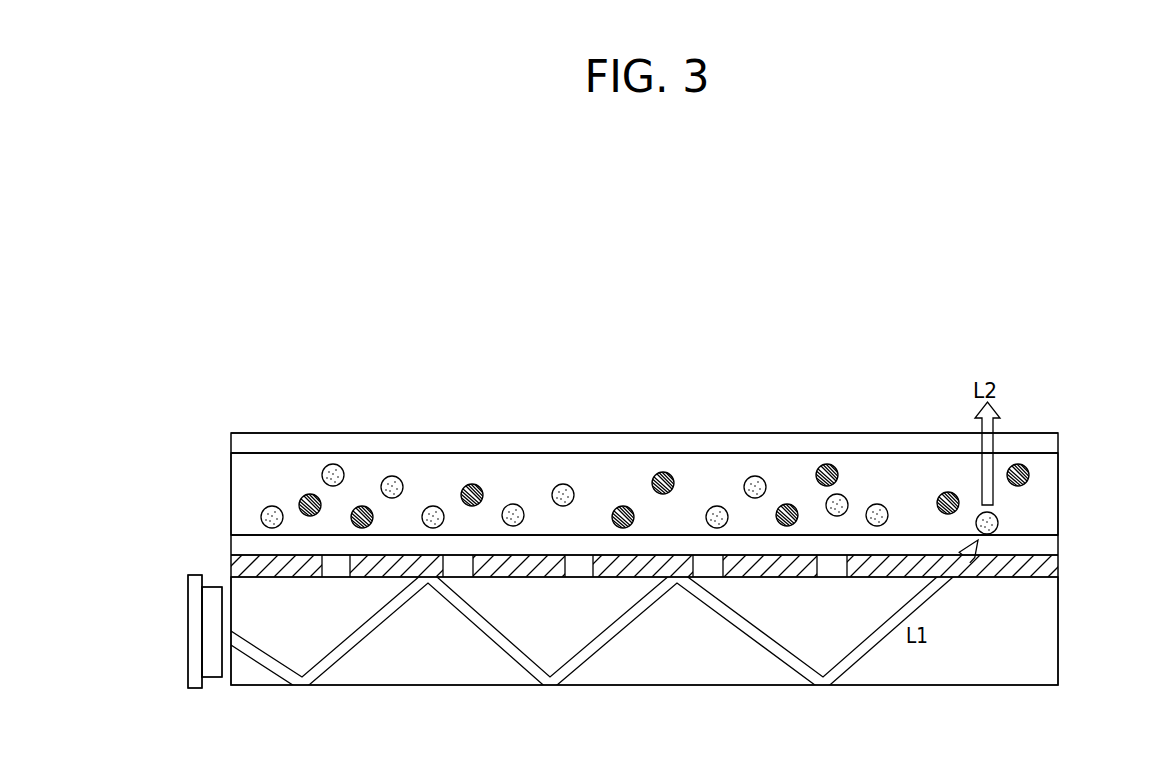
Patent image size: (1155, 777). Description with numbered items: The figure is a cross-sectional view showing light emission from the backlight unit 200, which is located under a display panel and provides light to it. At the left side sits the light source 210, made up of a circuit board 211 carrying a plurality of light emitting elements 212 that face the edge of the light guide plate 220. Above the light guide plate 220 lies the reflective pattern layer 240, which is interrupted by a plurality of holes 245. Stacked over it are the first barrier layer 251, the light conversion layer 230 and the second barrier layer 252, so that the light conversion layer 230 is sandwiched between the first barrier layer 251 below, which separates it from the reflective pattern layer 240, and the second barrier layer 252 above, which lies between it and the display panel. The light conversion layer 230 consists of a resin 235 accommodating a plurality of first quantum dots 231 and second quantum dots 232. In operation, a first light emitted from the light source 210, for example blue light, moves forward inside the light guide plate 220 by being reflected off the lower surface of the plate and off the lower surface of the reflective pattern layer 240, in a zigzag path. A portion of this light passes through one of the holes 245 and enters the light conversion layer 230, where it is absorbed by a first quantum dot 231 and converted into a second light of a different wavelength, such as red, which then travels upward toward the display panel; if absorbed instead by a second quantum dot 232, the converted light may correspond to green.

The backlight unit 200 is at (1061, 356).
The light source 210 is at (107, 588).
The circuit board 211 is at (196, 599).
The light emitting elements 212 is at (207, 638).
The light guide plate 220 is at (1052, 630).
The light conversion layer 230 is at (161, 453).
The first quantum dots 231 is at (261, 517).
The second quantum dots 232 is at (303, 498).
The resin 235 is at (247, 462).
The reflective pattern layer 240 is at (1052, 566).
The holes 245 is at (334, 578).
The first barrier layer 251 is at (1052, 541).
The second barrier layer 252 is at (1052, 444).